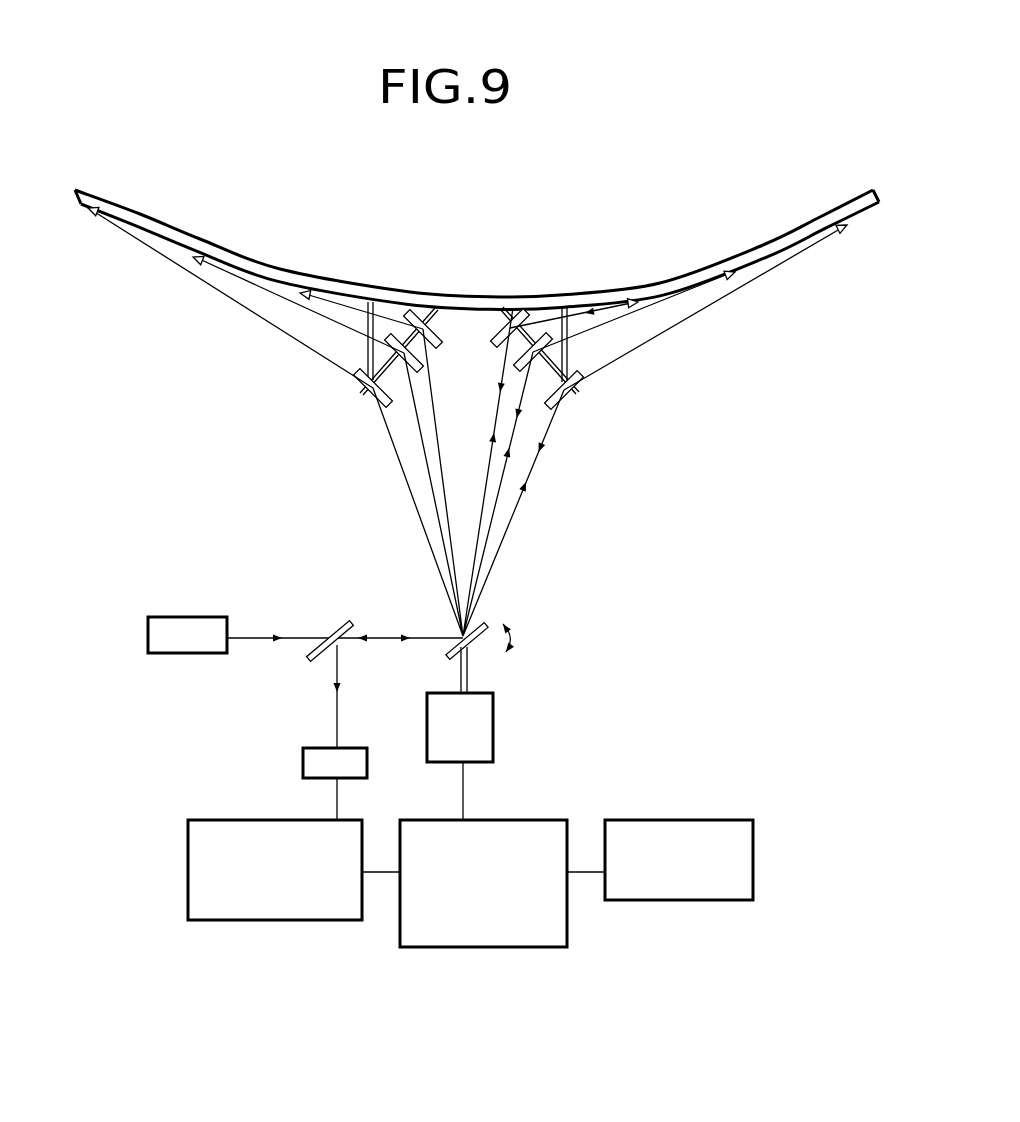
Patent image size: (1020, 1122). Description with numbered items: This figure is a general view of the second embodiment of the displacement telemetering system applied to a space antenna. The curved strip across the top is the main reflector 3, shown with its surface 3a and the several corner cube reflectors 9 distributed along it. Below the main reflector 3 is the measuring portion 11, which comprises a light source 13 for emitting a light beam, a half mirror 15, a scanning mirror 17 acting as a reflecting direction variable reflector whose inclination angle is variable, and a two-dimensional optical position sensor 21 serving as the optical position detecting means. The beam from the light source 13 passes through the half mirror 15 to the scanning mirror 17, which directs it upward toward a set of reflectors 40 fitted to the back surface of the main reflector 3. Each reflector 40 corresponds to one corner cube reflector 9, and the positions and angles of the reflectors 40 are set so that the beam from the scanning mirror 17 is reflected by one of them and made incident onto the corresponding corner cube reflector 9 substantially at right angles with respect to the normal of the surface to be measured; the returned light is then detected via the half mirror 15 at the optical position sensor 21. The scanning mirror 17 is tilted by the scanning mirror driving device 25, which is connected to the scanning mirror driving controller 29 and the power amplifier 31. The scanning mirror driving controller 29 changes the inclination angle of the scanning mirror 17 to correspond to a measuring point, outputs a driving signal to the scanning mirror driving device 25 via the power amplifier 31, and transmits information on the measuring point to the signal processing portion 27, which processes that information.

The main reflector 3 is at (490, 227).
The surface of strip 3a is at (823, 216).
The corner cube reflector 9 is at (104, 203).
The measuring portion 11 is at (187, 650).
The light source 13 is at (201, 617).
The half mirror 15 is at (341, 622).
The scanning mirror 17 is at (484, 619).
The two-dimensional optical position sensor 21 is at (303, 764).
The scanning mirror driving device 25 is at (493, 732).
The signal processing portion 27 is at (313, 920).
The scanning mirror driving controller 29 is at (523, 947).
The power amplifier 31 is at (705, 900).
The reflector 40 is at (510, 311).